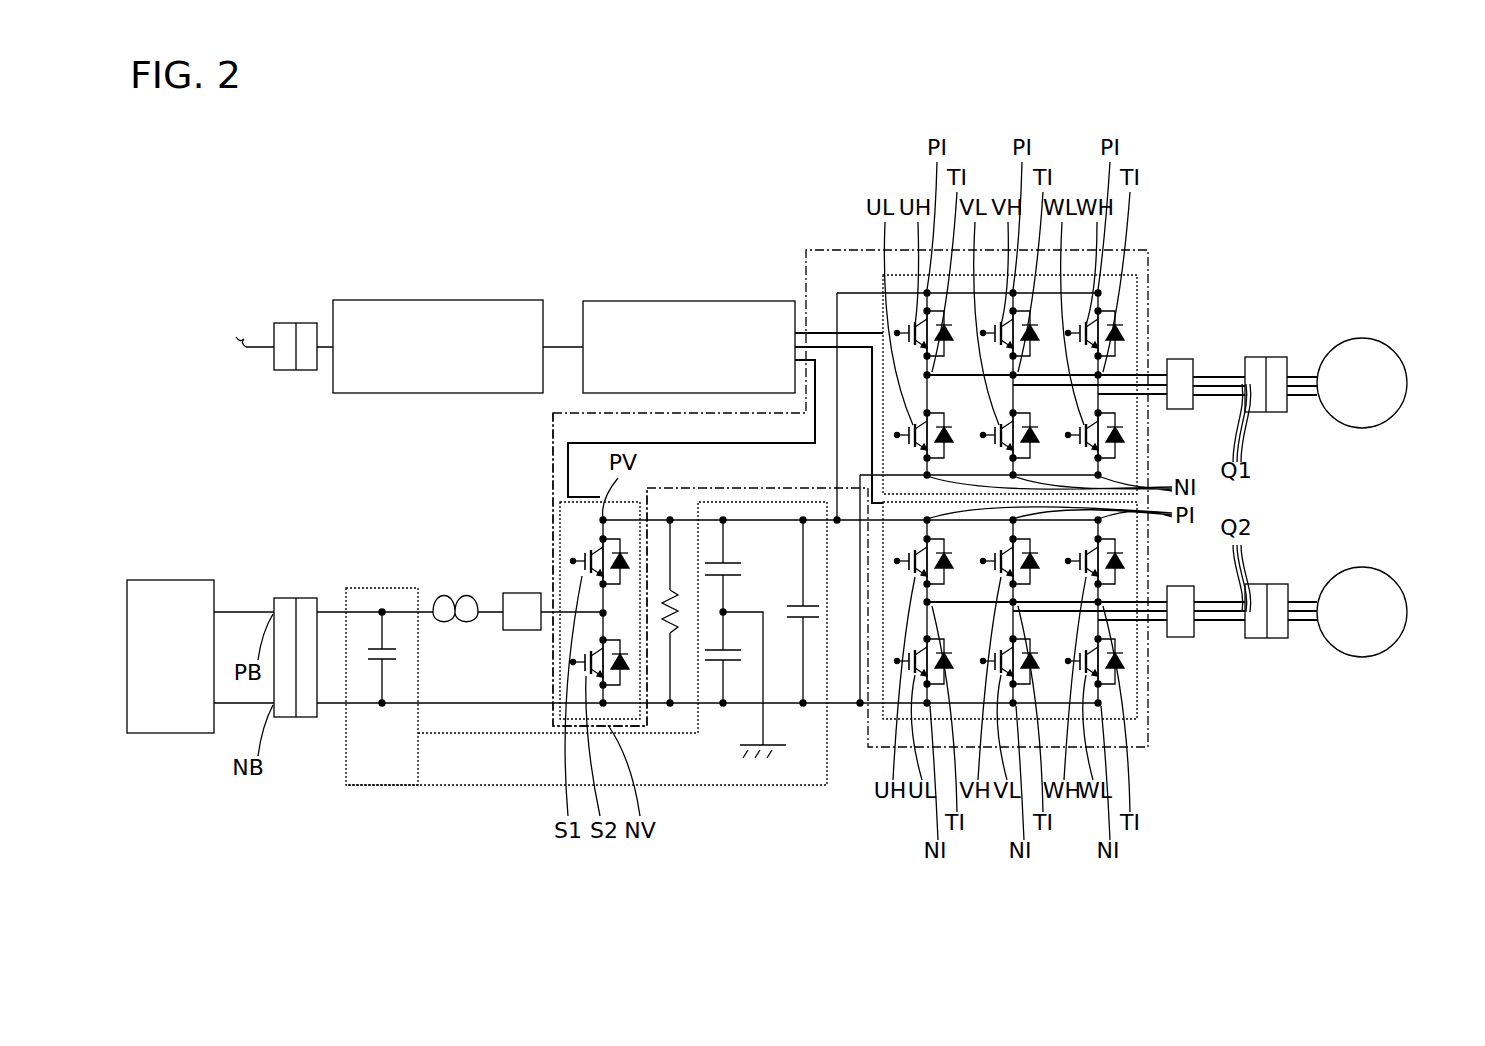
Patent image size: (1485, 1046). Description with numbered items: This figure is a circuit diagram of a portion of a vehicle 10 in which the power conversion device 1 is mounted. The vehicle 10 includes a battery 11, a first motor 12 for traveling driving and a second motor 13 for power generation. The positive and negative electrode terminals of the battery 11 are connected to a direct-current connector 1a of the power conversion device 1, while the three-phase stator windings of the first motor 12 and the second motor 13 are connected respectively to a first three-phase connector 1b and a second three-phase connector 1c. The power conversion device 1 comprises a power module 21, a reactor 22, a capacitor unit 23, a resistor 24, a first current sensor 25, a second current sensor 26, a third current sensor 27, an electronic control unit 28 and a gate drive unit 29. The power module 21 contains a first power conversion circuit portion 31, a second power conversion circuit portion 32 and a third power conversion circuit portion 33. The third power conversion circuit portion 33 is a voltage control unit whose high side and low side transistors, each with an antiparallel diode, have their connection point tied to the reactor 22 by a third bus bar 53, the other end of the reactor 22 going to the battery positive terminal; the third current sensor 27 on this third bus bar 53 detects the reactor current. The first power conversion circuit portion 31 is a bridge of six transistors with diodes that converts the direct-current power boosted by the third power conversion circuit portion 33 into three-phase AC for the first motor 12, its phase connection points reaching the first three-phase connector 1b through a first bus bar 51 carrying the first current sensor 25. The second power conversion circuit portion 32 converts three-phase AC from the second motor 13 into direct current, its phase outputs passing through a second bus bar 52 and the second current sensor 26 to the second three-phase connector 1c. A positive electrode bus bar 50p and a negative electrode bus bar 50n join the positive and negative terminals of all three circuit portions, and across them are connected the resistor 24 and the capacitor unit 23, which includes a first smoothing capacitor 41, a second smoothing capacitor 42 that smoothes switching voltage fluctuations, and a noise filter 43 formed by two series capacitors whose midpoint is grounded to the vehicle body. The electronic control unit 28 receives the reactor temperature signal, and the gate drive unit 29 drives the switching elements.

The power conversion device 1 is at (1074, 126).
The vehicle 10 is at (1224, 126).
The battery 11 is at (170, 580).
The first motor 12 is at (1362, 338).
The second motor 13 is at (1362, 567).
The direct-current connector 1a is at (283, 598).
The first three-phase connector 1b is at (1275, 357).
The second three-phase connector 1c is at (1277, 638).
The power module 21 is at (1148, 250).
The reactor 22 is at (452, 600).
The capacitor unit 23 is at (383, 588).
The resistor 24 is at (690, 735).
The first current sensor 25 is at (1185, 359).
The second current sensor 26 is at (1180, 637).
The third current sensor 27 is at (520, 593).
The electronic control unit 28 is at (437, 300).
The gate drive unit 29 is at (690, 301).
The first power conversion circuit portion 31 is at (1140, 290).
The second power conversion circuit portion 32 is at (1140, 562).
The third power conversion circuit portion 33 is at (553, 512).
The first smoothing capacitor 41 is at (373, 662).
The second smoothing capacitor 42 is at (797, 620).
The noise filter 43 is at (733, 665).
The positive electrode bus bar 50p is at (845, 705).
The negative electrode bus bar 50n is at (860, 706).
The first bus bar 51 is at (1210, 376).
The second bus bar 52 is at (1211, 620).
The third bus bar 53 is at (547, 614).